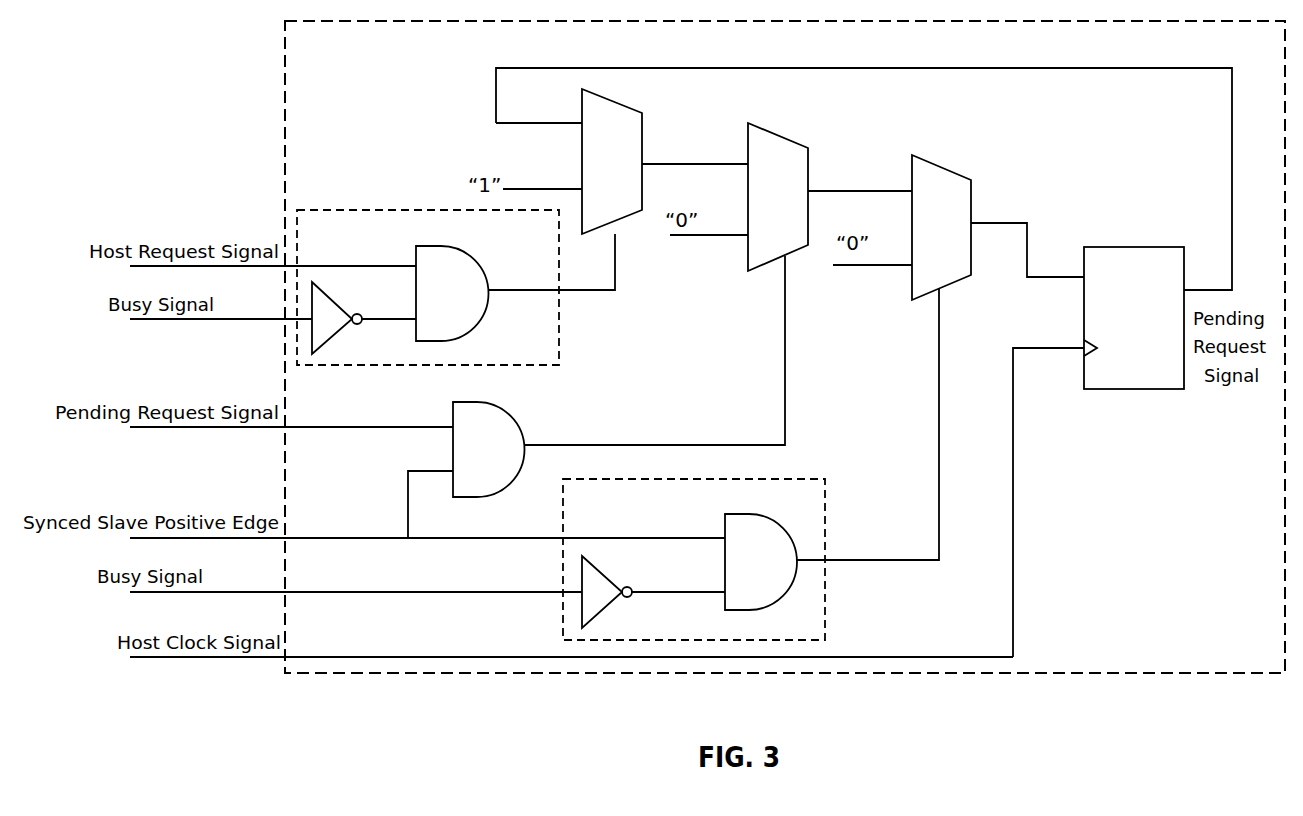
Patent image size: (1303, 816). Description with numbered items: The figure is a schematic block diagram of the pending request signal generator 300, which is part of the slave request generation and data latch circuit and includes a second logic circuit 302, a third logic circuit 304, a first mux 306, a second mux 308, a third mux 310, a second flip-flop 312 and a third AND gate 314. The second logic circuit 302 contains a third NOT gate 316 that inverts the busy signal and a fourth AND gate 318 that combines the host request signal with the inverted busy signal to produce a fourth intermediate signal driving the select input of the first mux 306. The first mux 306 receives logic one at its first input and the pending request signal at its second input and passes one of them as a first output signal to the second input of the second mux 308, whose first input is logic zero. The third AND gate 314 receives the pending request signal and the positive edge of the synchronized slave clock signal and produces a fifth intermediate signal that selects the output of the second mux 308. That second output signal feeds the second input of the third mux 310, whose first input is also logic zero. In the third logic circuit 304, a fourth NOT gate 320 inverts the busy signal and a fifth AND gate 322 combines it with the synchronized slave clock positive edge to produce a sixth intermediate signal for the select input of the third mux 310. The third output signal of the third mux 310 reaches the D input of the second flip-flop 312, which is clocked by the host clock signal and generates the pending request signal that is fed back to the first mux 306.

The pending request signal generator 300 is at (376, 674).
The second logic circuit 302 is at (357, 209).
The third logic circuit 304 is at (793, 479).
The first mux 306 is at (620, 100).
The second mux 308 is at (783, 133).
The third mux 310 is at (945, 165).
The second flip-flop 312 is at (1133, 246).
The third AND gate 314 is at (475, 402).
The third NOT gate 316 is at (339, 300).
The fourth AND gate 318 is at (440, 246).
The fourth NOT gate 320 is at (602, 570).
The fifth AND gate 322 is at (757, 514).